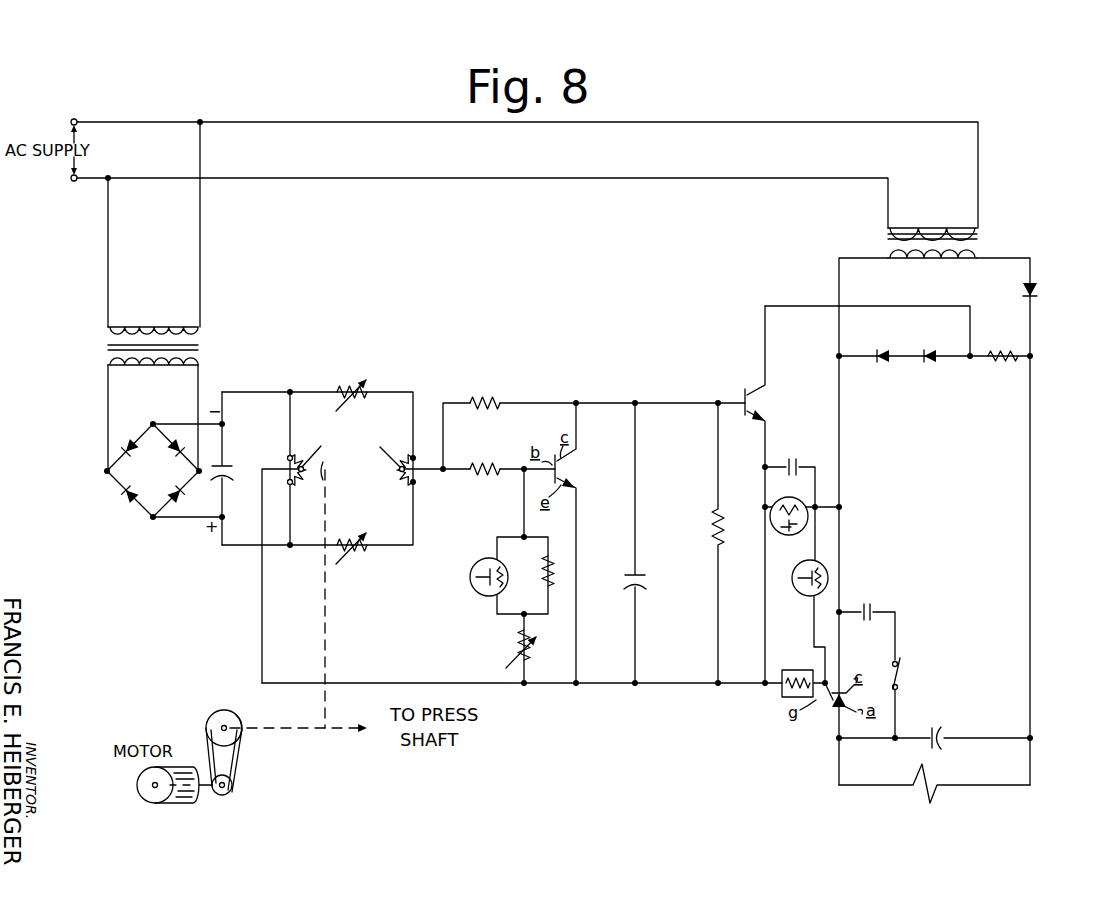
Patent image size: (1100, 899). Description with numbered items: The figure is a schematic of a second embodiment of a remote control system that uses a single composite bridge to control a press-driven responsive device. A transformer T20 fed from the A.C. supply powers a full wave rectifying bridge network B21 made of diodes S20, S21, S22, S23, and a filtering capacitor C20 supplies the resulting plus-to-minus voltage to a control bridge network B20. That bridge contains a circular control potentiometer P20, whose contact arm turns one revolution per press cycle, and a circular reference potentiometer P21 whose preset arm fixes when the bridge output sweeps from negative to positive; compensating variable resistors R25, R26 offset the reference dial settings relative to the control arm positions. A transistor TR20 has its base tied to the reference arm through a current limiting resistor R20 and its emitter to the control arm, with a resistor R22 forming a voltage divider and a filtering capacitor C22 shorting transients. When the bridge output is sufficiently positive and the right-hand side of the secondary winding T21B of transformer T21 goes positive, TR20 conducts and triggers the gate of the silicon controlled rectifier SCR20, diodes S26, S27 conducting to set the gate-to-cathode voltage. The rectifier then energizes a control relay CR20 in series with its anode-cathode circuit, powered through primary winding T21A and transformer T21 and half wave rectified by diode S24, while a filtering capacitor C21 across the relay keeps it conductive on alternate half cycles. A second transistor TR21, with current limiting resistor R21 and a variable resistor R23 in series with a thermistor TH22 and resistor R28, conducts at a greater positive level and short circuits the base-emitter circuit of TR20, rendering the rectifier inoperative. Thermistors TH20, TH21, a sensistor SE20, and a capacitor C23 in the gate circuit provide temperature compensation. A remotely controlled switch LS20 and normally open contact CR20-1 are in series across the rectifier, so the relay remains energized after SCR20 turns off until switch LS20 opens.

The transformer T20 is at (104, 349).
The full wave rectifying bridge network B21 is at (170, 481).
The diode S20 is at (120, 447).
The diode S21 is at (175, 440).
The diode S22 is at (184, 504).
The diode S23 is at (118, 499).
The filtering capacitor C20 is at (233, 474).
The compensating variable resistor R25 is at (352, 388).
The compensating variable resistor R26 is at (353, 556).
The control bridge network B20 is at (352, 485).
The circular control potentiometer P20 is at (312, 482).
The circular reference potentiometer P21 is at (398, 482).
The current limiting resistor R20 is at (481, 401).
The current limiting resistor R21 is at (478, 472).
The transistor TR21 is at (570, 469).
The thermistor TH22 is at (476, 582).
The resistor R28 is at (554, 571).
The resistor R23 is at (515, 650).
The filtering capacitor C22 is at (630, 584).
The resistor R22 is at (712, 528).
The transistor TR20 is at (766, 409).
The capacitor C23 is at (803, 452).
The thermistor TH20 is at (788, 534).
The thermistor TH21 is at (792, 597).
The sensistor SE20 is at (776, 697).
The static-latching switch SCR20 is at (828, 708).
The normally open contact CR20-1 is at (879, 608).
The remotely controlled switch LS20 is at (902, 670).
The filtering capacitor C21 is at (934, 730).
The control relay CR20 is at (925, 794).
The diode S26 is at (885, 362).
The diode S27 is at (934, 362).
The diode S24 is at (1040, 291).
The transformer T21 is at (952, 230).
The primary winding T21A is at (928, 212).
The secondary winding T21B is at (930, 262).